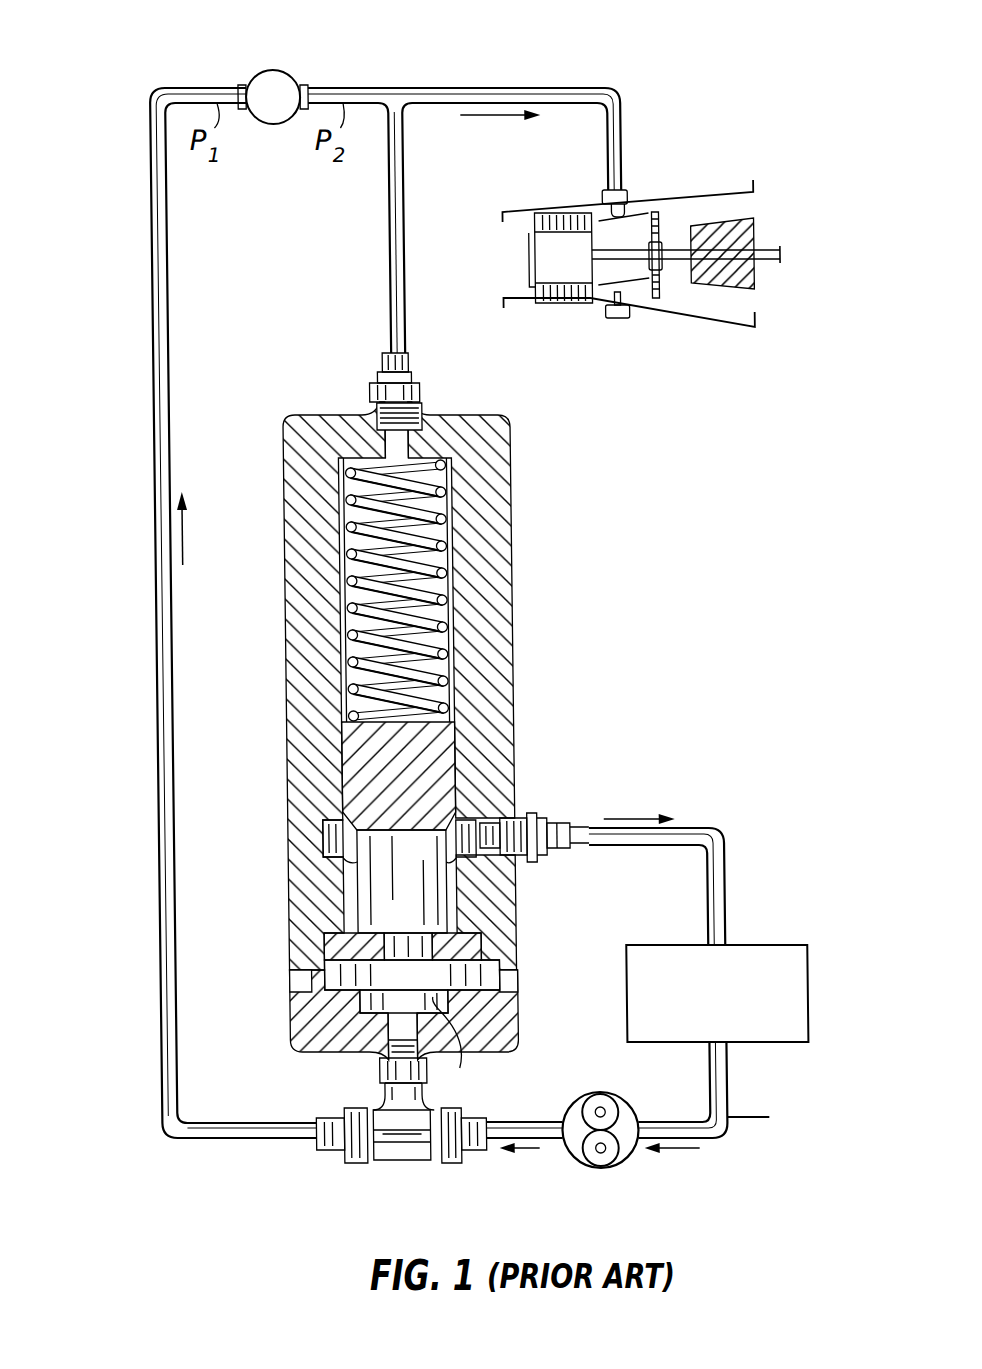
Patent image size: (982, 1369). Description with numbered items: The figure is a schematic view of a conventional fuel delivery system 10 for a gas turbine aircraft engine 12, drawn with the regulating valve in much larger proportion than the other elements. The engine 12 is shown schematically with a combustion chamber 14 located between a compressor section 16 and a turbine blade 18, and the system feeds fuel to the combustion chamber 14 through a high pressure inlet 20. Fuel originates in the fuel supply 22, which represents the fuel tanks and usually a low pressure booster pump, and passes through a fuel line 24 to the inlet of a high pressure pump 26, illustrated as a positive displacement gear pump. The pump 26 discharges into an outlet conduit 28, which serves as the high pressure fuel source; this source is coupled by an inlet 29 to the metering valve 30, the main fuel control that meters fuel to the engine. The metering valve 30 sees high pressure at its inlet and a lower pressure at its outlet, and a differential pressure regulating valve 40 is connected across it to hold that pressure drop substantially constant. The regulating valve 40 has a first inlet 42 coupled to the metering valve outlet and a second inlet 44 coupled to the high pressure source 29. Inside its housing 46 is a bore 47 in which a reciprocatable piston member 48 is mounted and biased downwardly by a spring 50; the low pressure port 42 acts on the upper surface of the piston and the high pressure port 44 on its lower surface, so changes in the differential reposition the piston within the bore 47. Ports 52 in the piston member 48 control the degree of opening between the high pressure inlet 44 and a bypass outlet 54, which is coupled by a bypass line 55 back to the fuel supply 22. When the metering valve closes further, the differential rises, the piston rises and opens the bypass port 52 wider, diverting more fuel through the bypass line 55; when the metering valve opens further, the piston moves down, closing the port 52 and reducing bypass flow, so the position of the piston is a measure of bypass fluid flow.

The fuel delivery system 10 is at (152, 58).
The gas turbine aircraft engine 12 is at (621, 254).
The combustion chamber 14 is at (632, 211).
The compressor section 16 is at (514, 224).
The turbine blade 18 is at (658, 297).
The high pressure inlet 20 is at (500, 88).
The fuel supply 22 is at (762, 945).
The fuel line 24 is at (724, 1097).
The high pressure pump 26 is at (573, 1094).
The outlet conduit 28 is at (489, 1140).
The inlet 29 is at (150, 613).
The metering valve 30 is at (285, 125).
The differential pressure regulating valve 40 is at (405, 758).
The first inlet 42 is at (399, 440).
The second inlet 44 is at (368, 1060).
The housing 46 is at (279, 655).
The bore 47 is at (469, 590).
The piston member 48 is at (442, 745).
The spring 50 is at (435, 548).
The bypass port 52 is at (336, 862).
The bypass outlet 54 is at (516, 812).
The bypass line 55 is at (690, 827).